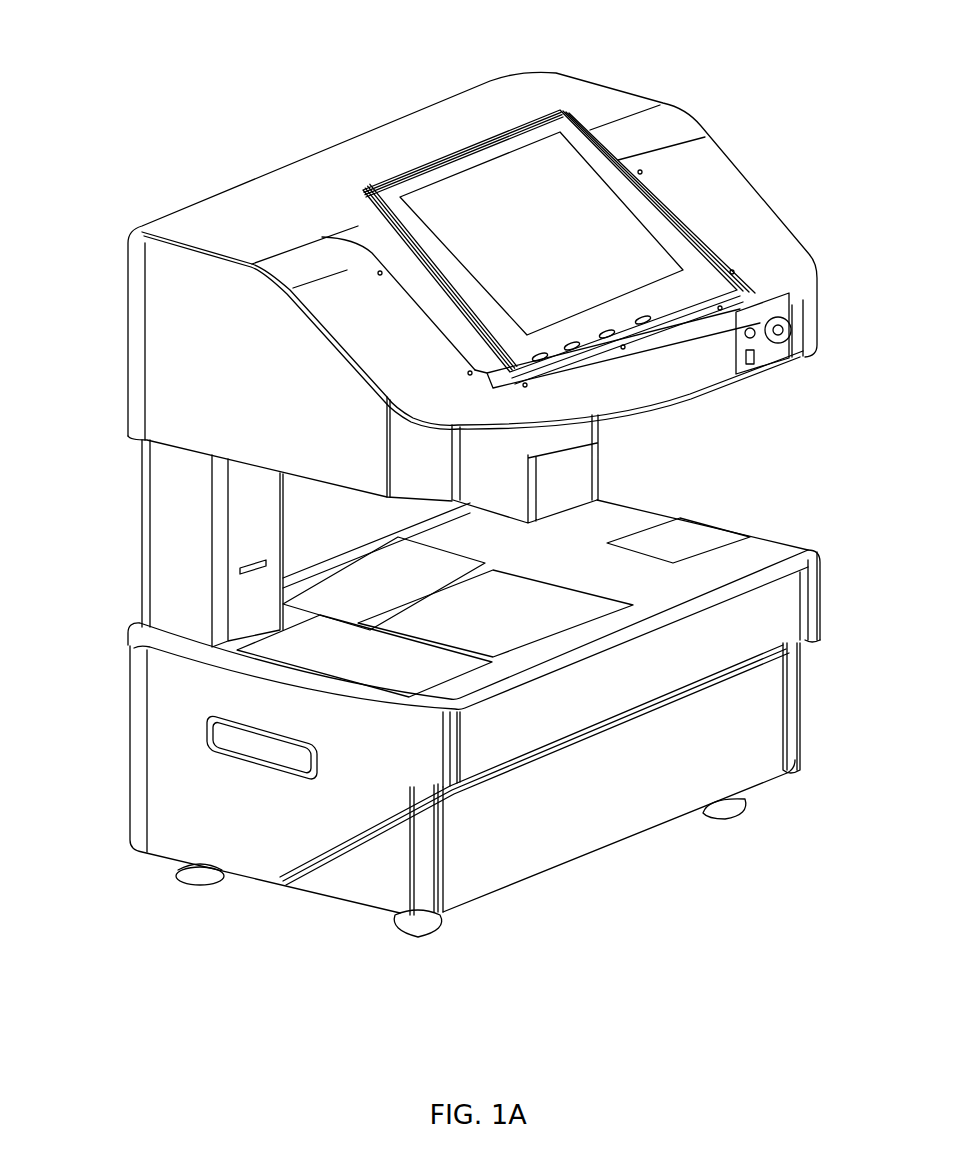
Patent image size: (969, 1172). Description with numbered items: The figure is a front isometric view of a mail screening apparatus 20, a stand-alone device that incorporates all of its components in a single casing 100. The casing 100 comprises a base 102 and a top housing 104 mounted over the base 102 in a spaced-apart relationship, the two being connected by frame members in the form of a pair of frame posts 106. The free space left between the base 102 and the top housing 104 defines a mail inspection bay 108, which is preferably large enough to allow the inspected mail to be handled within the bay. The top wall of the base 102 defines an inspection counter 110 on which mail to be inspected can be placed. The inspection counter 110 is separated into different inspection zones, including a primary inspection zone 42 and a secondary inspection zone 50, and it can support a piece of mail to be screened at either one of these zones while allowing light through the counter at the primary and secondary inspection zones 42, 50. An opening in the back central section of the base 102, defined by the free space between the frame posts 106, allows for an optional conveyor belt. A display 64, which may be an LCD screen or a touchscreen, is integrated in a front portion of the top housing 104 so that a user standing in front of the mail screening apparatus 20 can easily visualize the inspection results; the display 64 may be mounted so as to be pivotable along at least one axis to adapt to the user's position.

The mail screening apparatus 20 is at (214, 77).
The casing 100 is at (110, 192).
The top housing 104 is at (747, 203).
The display 64 is at (532, 239).
The frame posts 106 is at (268, 513).
The mail inspection bay 108 is at (745, 472).
The inspection counter 110 is at (790, 546).
The primary inspection zone 42 is at (480, 622).
The secondary inspection zone 50 is at (665, 549).
The base 102 is at (267, 840).